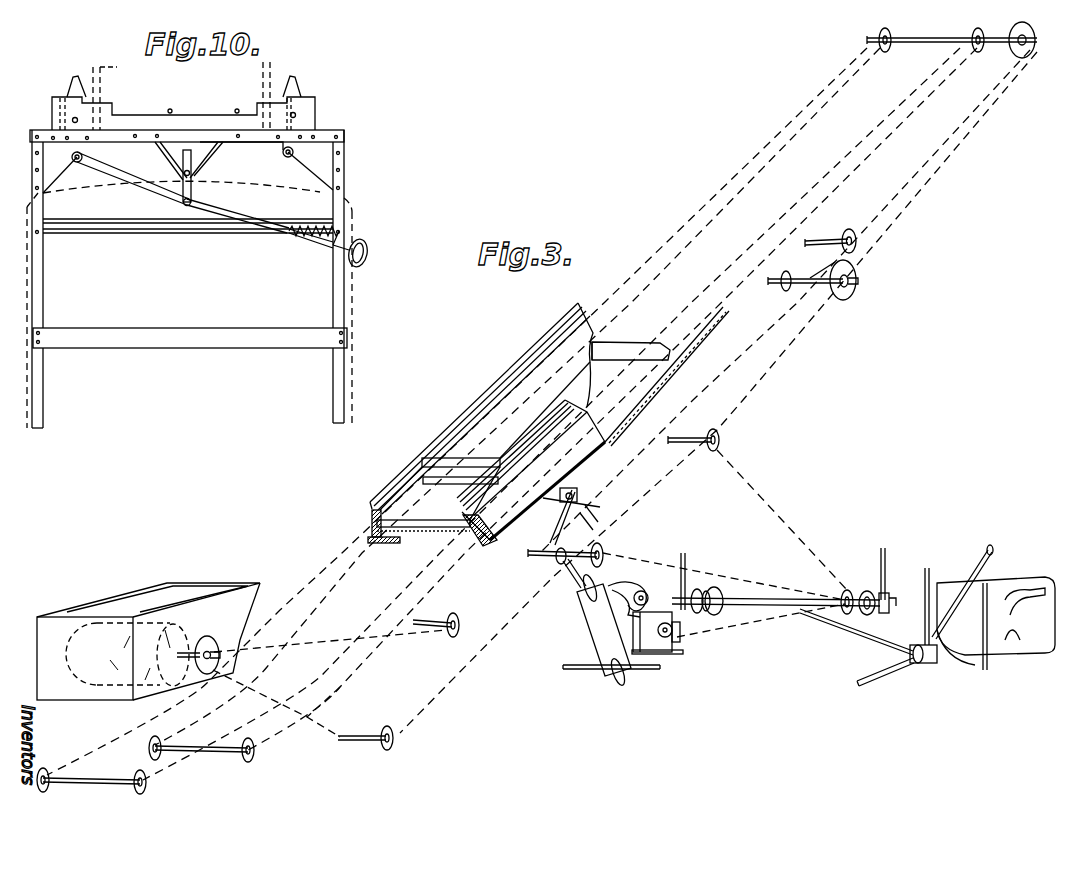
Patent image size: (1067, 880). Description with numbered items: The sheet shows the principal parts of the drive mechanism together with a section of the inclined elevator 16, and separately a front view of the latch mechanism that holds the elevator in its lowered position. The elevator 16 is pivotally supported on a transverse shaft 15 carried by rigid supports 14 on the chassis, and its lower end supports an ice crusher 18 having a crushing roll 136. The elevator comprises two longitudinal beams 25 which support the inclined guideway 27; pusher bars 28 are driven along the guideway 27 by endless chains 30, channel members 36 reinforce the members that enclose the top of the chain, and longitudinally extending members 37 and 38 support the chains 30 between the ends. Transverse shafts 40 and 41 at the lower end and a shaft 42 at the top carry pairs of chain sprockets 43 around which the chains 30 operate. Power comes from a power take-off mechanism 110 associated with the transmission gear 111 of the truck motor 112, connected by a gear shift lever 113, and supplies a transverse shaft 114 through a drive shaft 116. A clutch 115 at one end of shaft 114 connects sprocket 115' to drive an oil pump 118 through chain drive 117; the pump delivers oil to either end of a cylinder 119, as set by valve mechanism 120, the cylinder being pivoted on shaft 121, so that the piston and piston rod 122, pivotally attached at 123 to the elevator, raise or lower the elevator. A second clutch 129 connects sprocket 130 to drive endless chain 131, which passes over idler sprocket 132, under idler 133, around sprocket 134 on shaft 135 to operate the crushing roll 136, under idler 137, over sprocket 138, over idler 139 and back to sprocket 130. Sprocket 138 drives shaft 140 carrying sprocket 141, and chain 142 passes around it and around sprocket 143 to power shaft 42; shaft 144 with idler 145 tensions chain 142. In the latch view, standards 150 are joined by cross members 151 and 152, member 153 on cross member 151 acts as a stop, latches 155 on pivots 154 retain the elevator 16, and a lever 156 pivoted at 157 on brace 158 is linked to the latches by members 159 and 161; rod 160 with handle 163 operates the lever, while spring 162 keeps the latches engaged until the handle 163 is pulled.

In FIG. 10, the standards 150 is at (44, 293).
In FIG. 10, the cross member 151 is at (345, 134).
In FIG. 10, the cross member 152 is at (330, 334).
In FIG. 10, the member 153 is at (160, 112).
In FIG. 10, the pivots 154 is at (296, 113).
In FIG. 10, the latches 155 is at (75, 88).
In FIG. 10, the inclined elevator 16 is at (181, 91).
In FIG. 10, the lever 156 is at (196, 190).
In FIG. 10, the pivot 157 is at (198, 176).
In FIG. 10, the brace 158 is at (205, 142).
In FIG. 10, the member 159 is at (265, 152).
In FIG. 10, the rod 160 is at (255, 219).
In FIG. 10, the member 161 is at (90, 166).
In FIG. 10, the spring 162 is at (305, 245).
In FIG. 10, the handle 163 is at (366, 246).
In FIG. 3, the endless chains 30 is at (885, 110).
In FIG. 3, the chain 142 is at (928, 170).
In FIG. 3, the shaft 42 is at (866, 39).
In FIG. 3, the chain sprockets 43 is at (975, 31).
In FIG. 3, the sprocket 143 is at (1014, 54).
In FIG. 3, the transverse shaft 40 is at (91, 795).
In FIG. 3, the transverse shaft 41 is at (201, 761).
In FIG. 3, the shaft 144 is at (842, 236).
In FIG. 3, the idler 145 is at (858, 236).
In FIG. 3, the sprocket 141 is at (781, 290).
In FIG. 3, the sprocket 138 is at (858, 270).
In FIG. 3, the shaft 140 is at (859, 284).
In FIG. 3, the idler 139 is at (722, 437).
In FIG. 3, the channel members 36 is at (490, 392).
In FIG. 3, the guideway 27 is at (548, 372).
In FIG. 3, the longitudinal beams 25 is at (572, 452).
In FIG. 3, the longitudinally extending member 38 is at (470, 516).
In FIG. 3, the longitudinally extending member 37 is at (645, 380).
In FIG. 3, the pusher bars 28 is at (605, 343).
In FIG. 3, the rigid supports 14 is at (557, 517).
In FIG. 3, the transverse shaft 15 is at (580, 505).
In FIG. 3, the ice crusher 18 is at (225, 572).
In FIG. 3, the crushing roll 136 is at (208, 607).
In FIG. 3, the sprocket 134 is at (215, 664).
In FIG. 3, the shaft 135 is at (216, 653).
In FIG. 3, the idler 137 is at (452, 638).
In FIG. 3, the idler 133 is at (395, 743).
In FIG. 3, the endless chain 131 is at (322, 722).
In FIG. 3, the pivotal attachment 123 is at (553, 568).
In FIG. 3, the idler sprocket 132 is at (602, 548).
In FIG. 3, the piston and piston rod 122 is at (572, 590).
In FIG. 3, the cylinder 119 is at (594, 612).
In FIG. 3, the valve mechanism 120 is at (642, 595).
In FIG. 3, the oil pump 118 is at (680, 656).
In FIG. 3, the chain drive 117 is at (698, 636).
In FIG. 3, the shaft 121 is at (570, 670).
In FIG. 3, the clutch 115 is at (778, 579).
In FIG. 3, the drive shaft 116 is at (698, 590).
In FIG. 3, the sprocket 115' is at (739, 588).
In FIG. 3, the sprocket 130 is at (840, 598).
In FIG. 3, the second clutch 129 is at (862, 590).
In FIG. 3, the transverse shaft 114 is at (893, 612).
In FIG. 3, the power take-off mechanism 110 is at (940, 665).
In FIG. 3, the gear shift lever 113 is at (997, 541).
In FIG. 3, the transmission gear 111 is at (975, 665).
In FIG. 3, the truck motor 112 is at (996, 611).